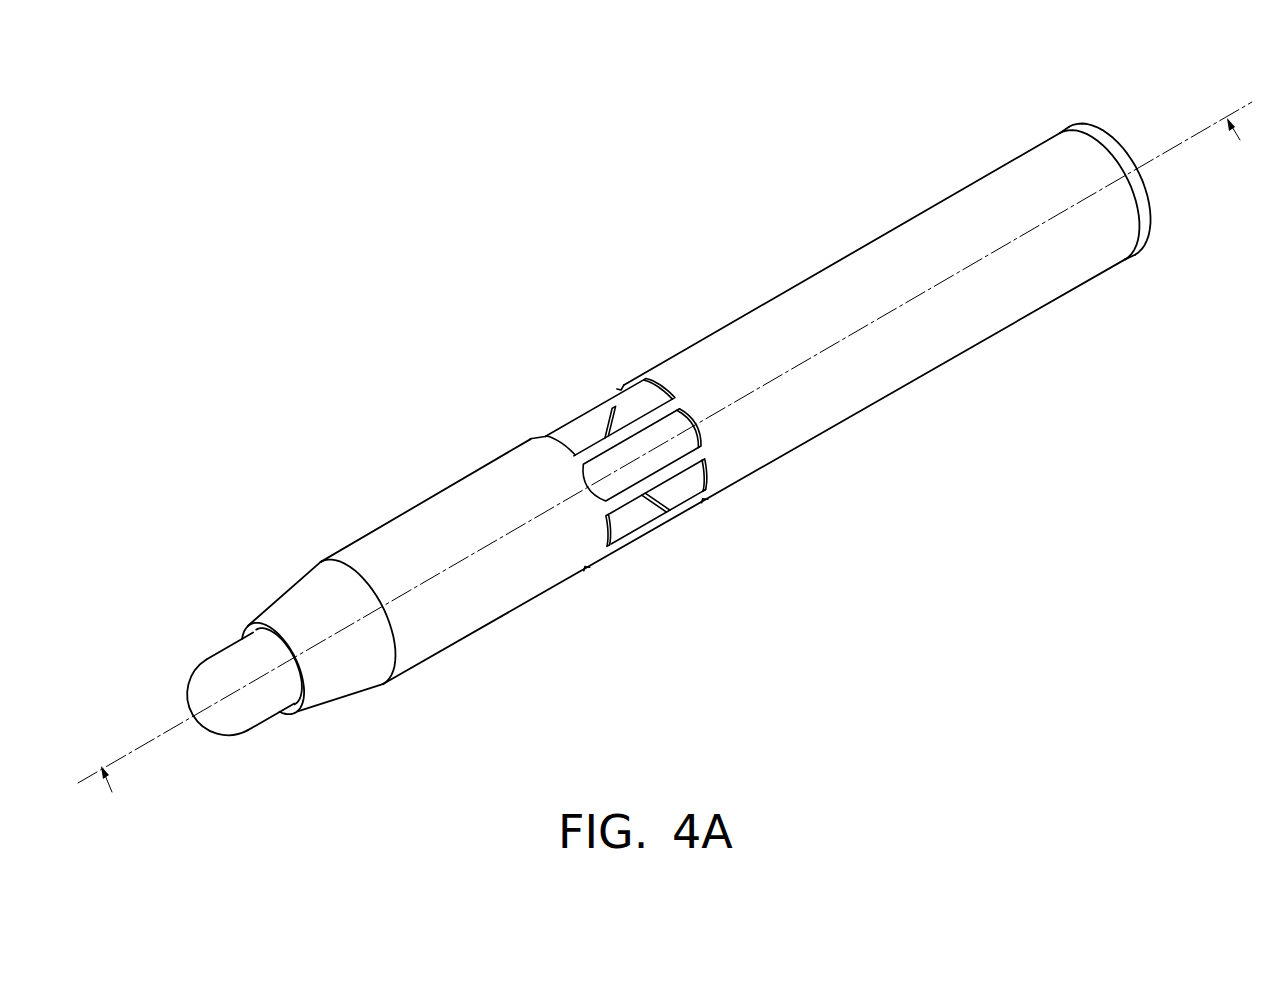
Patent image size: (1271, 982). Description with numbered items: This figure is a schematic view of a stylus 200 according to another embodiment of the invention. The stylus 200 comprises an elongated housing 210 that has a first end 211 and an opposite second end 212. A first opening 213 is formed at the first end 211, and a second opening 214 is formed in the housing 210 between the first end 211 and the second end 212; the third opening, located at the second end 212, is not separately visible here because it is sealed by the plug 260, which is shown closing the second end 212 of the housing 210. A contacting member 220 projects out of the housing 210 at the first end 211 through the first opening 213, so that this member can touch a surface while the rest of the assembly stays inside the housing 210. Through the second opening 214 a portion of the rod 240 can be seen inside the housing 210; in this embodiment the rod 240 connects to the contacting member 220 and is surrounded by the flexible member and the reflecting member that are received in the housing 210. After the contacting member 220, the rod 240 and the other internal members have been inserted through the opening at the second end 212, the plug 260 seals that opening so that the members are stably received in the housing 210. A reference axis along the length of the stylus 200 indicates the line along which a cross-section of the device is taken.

The stylus 200 is at (373, 203).
The housing 210 is at (830, 290).
The first end 211 is at (240, 617).
The second end 212 is at (1054, 118).
The first opening 213 is at (290, 708).
The second opening 214 is at (587, 438).
The contacting member 220 is at (205, 693).
The rod 240 is at (657, 440).
The plug 260 is at (1107, 146).